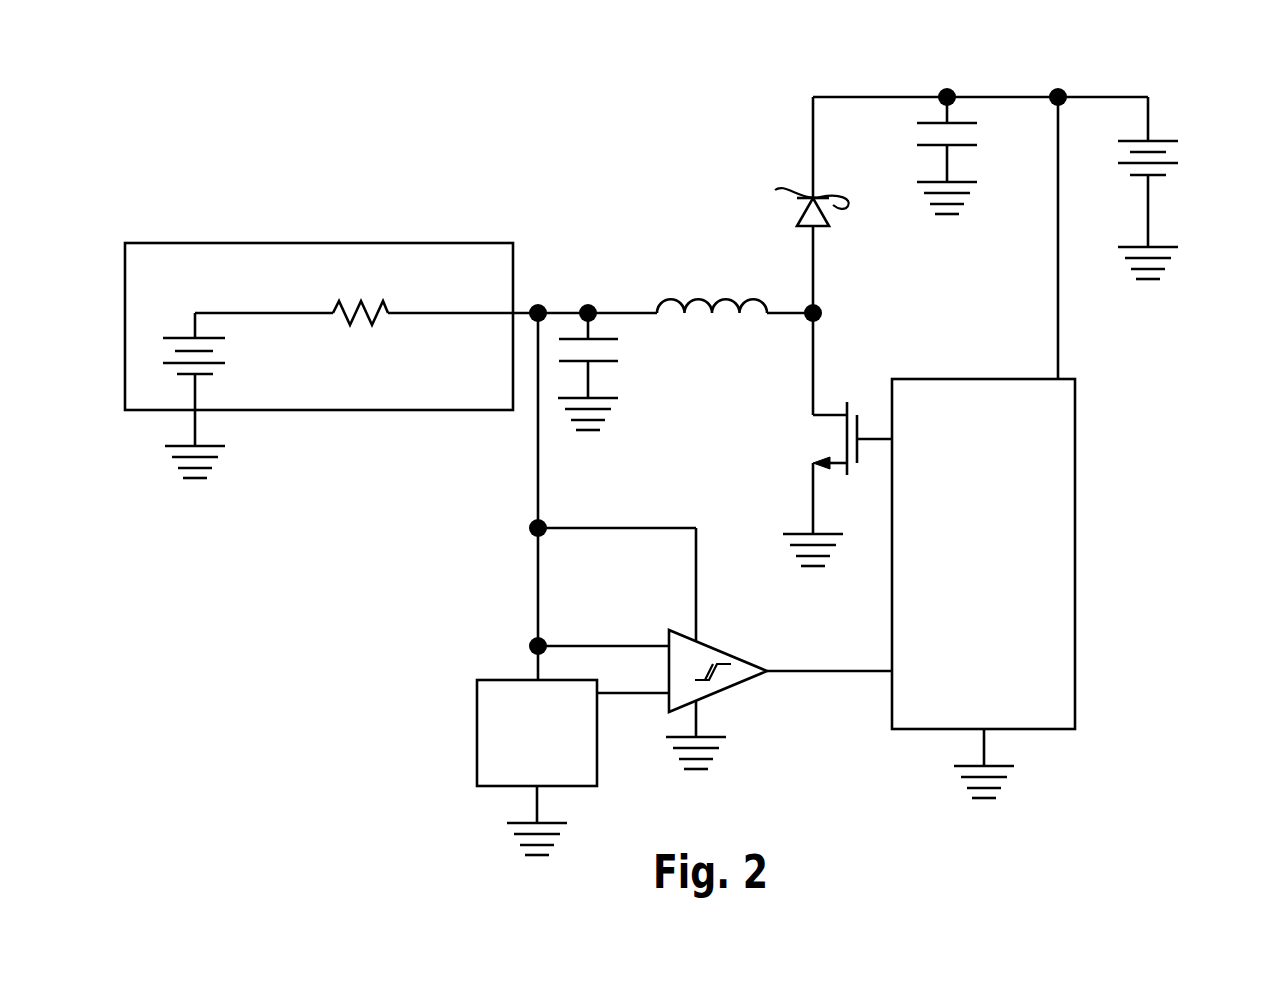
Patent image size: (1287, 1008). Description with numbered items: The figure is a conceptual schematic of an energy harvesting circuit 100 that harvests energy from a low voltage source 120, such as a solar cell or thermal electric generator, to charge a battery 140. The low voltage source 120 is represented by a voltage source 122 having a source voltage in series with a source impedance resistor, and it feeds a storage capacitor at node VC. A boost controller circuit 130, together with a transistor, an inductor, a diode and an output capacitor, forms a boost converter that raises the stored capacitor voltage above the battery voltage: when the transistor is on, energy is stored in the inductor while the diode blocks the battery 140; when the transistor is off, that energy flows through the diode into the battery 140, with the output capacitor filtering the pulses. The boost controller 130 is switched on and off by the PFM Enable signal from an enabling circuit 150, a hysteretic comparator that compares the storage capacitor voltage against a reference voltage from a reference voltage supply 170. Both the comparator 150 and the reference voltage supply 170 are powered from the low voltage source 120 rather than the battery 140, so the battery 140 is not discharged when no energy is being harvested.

The energy harvesting circuit 100 is at (267, 118).
The low voltage source 120 is at (345, 243).
The voltage source 122 is at (158, 352).
The boost controller circuit 130 is at (932, 379).
The battery 140 is at (1186, 161).
The enabling circuit 150 is at (706, 645).
The reference voltage supply 170 is at (477, 692).